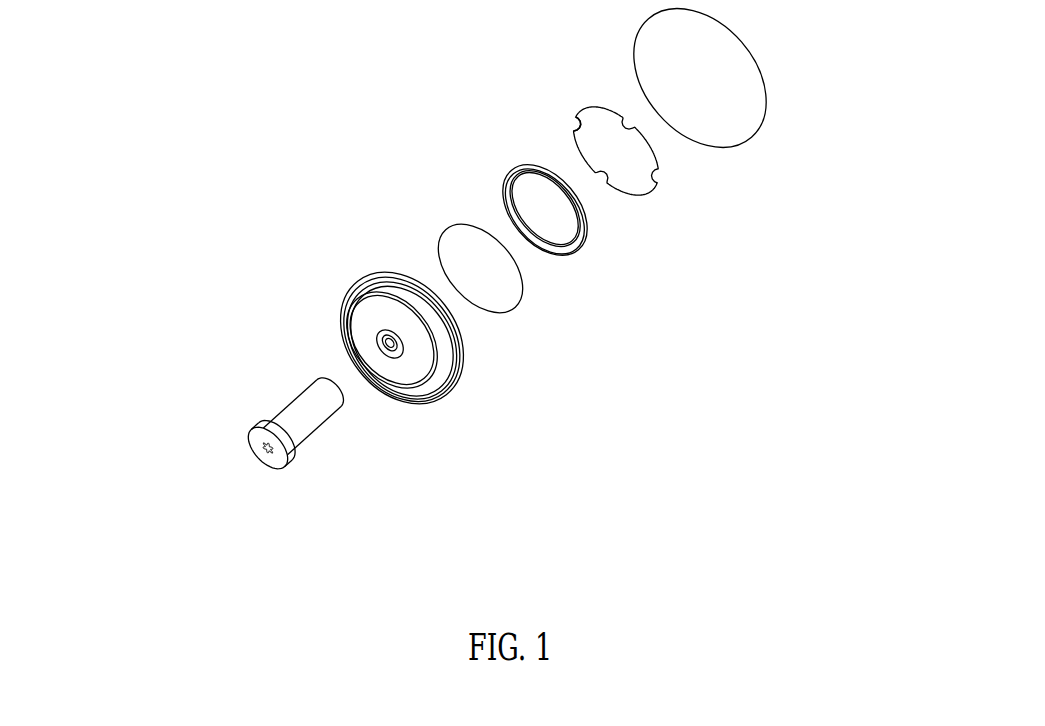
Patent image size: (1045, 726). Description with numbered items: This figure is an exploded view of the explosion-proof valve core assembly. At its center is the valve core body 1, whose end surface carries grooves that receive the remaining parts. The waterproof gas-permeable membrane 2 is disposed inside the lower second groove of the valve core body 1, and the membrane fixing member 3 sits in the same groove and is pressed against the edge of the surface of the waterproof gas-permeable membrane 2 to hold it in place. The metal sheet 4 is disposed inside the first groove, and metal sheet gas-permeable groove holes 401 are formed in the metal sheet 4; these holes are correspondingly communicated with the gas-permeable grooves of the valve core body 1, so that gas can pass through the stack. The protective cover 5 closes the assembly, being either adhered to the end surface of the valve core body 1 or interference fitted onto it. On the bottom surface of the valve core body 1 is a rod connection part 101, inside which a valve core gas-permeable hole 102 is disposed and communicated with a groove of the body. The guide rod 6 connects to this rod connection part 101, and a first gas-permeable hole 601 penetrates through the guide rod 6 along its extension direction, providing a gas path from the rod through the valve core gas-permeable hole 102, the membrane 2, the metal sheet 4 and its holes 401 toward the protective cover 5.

The valve core body 1 is at (450, 384).
The rod connection part 101 is at (340, 272).
The valve core gas-permeable hole 102 is at (283, 294).
The waterproof gas-permeable membrane 2 is at (551, 324).
The membrane fixing member 3 is at (648, 273).
The metal sheet 4 is at (705, 205).
The metal sheet gas-permeable groove hole 401 is at (468, 65).
The protective cover 5 is at (772, 121).
The guide rod 6 is at (361, 492).
The first gas-permeable hole 601 is at (156, 390).